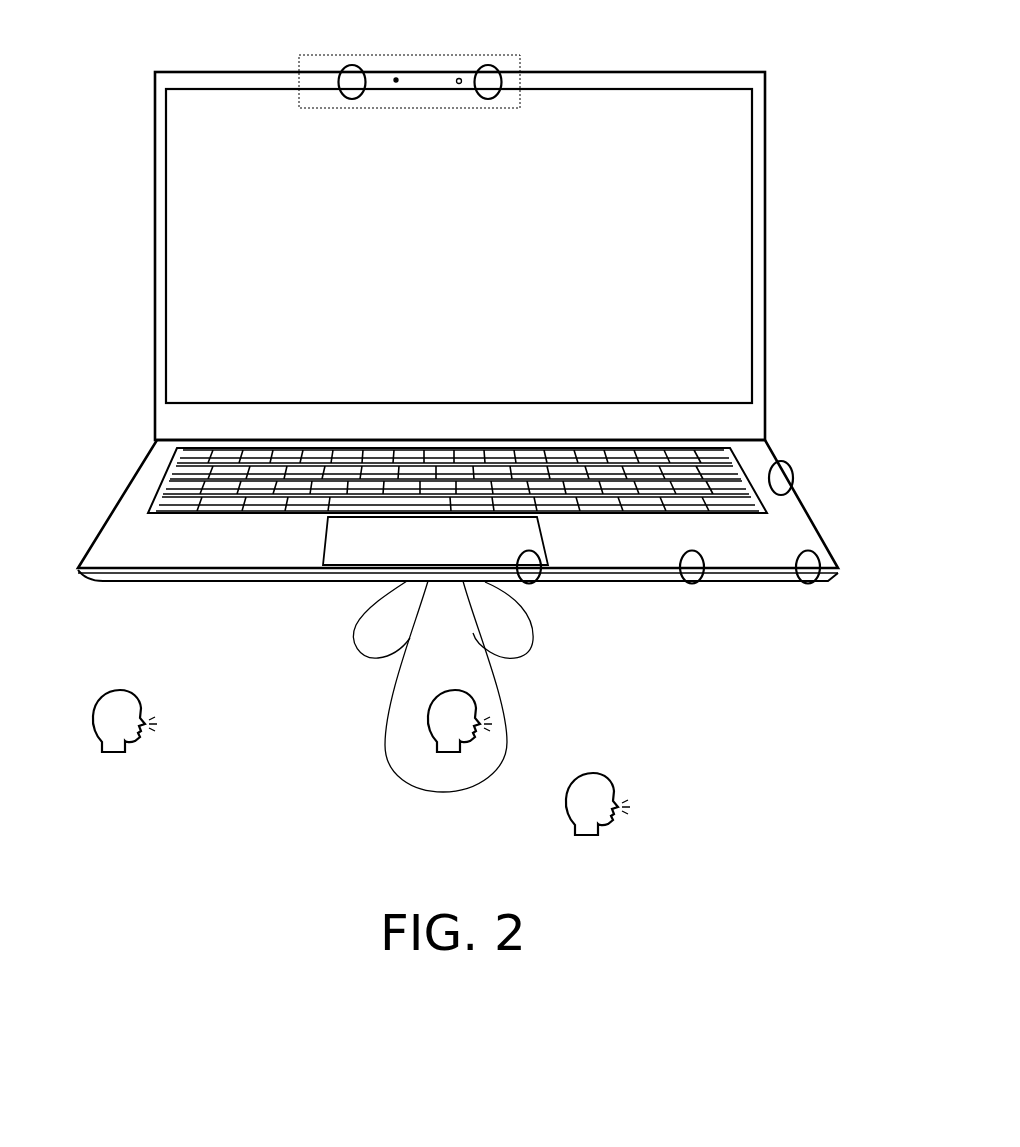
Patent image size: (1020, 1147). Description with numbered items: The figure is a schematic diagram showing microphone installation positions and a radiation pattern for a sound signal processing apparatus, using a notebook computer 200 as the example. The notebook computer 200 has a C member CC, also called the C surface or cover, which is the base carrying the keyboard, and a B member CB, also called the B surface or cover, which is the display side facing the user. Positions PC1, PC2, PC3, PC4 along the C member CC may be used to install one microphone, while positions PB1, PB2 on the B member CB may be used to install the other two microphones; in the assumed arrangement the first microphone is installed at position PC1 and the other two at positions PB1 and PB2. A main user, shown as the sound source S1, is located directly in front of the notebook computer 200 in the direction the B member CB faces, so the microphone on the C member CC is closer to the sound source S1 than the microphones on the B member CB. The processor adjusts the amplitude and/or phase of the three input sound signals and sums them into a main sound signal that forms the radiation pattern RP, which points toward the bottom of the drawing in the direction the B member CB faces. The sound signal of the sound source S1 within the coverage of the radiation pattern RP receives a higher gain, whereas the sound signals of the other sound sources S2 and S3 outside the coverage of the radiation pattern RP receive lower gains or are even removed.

The notebook computer 200 is at (855, 690).
The B member CB is at (292, 54).
The C member CC is at (146, 434).
The position PB1 is at (352, 64).
The position PB2 is at (488, 64).
The position PC1 is at (528, 585).
The position PC2 is at (693, 585).
The position PC3 is at (810, 585).
The position PC4 is at (788, 462).
The radiation pattern RP is at (363, 503).
The sound source S1 is at (421, 740).
The sound source S2 is at (574, 809).
The sound source S3 is at (100, 726).